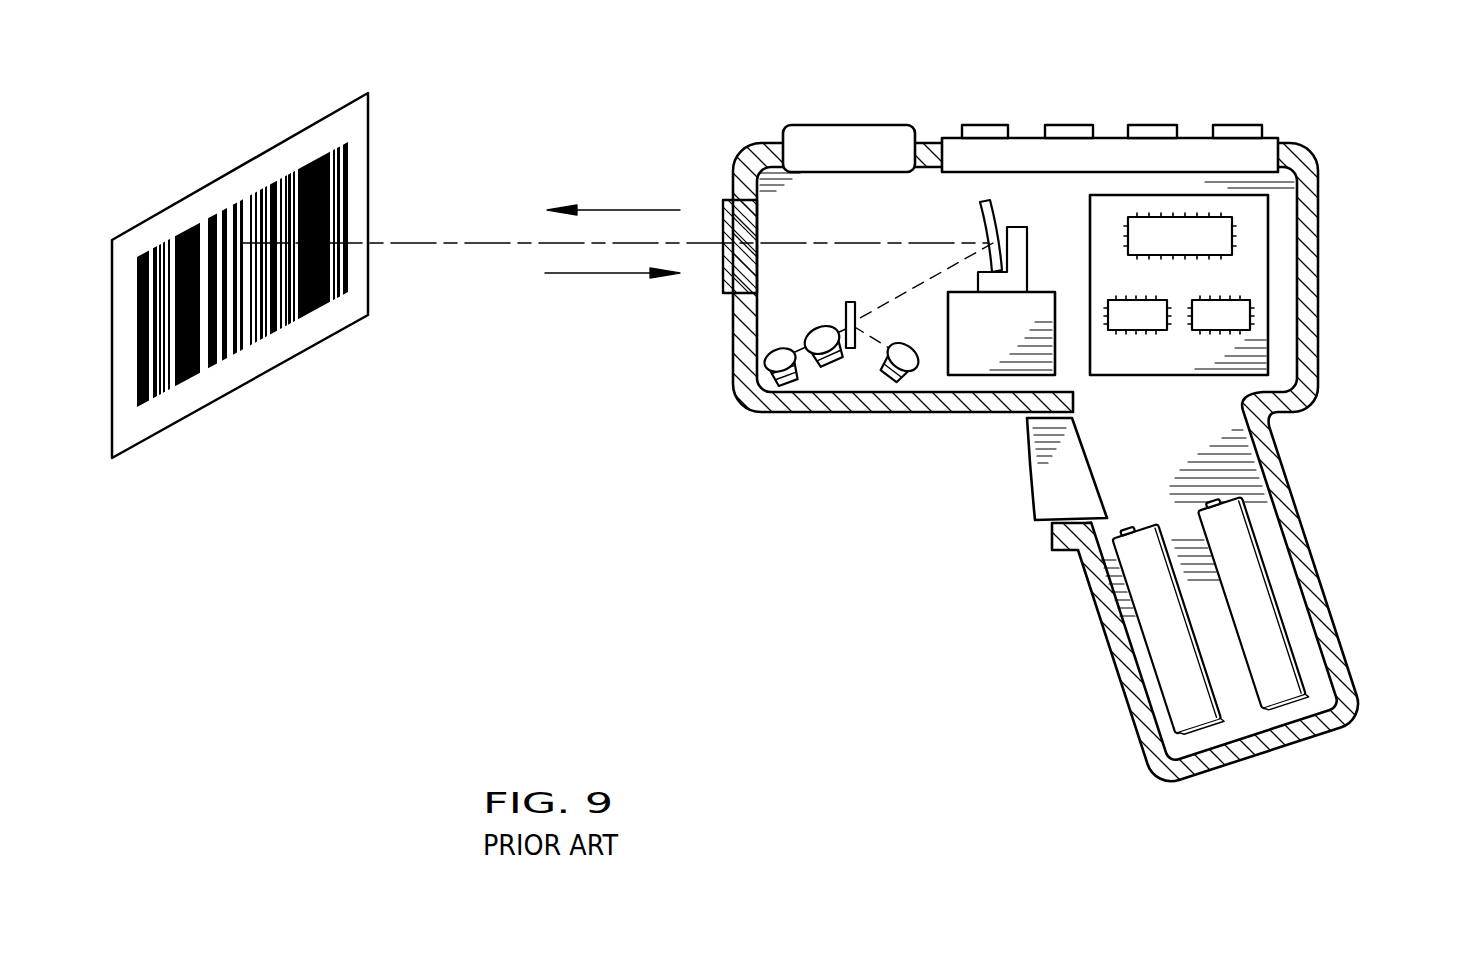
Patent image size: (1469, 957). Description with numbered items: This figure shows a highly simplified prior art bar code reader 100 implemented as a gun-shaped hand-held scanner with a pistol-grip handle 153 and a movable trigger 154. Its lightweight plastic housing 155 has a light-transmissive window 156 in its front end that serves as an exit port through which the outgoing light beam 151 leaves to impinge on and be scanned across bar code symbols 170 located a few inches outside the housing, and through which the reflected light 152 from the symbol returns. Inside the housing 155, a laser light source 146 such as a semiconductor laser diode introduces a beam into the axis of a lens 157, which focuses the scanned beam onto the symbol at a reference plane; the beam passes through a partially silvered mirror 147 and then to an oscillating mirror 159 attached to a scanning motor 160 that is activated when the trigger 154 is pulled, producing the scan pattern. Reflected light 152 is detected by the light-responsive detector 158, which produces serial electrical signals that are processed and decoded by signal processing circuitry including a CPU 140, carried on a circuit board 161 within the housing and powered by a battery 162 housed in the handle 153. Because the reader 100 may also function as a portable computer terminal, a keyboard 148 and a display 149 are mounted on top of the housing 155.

The reader 100 is at (843, 570).
The CPU 140 is at (1155, 232).
The laser light source 146 is at (797, 392).
The partially silvered mirror 147 is at (850, 302).
The keyboard 148 is at (1195, 143).
The display 149 is at (848, 128).
The outgoing light beam 151 is at (606, 212).
The reflected light 152 is at (565, 276).
The handle 153 is at (1105, 650).
The trigger 154 is at (1063, 493).
The housing 155 is at (1312, 363).
The window 156 is at (722, 210).
The lens 157 is at (830, 362).
The detector 158 is at (888, 383).
The oscillating mirror 159 is at (990, 210).
The scanning motor 160 is at (985, 360).
The printed circuit board 161 is at (1277, 247).
The battery 162 is at (1272, 690).
The symbols 170 is at (302, 160).